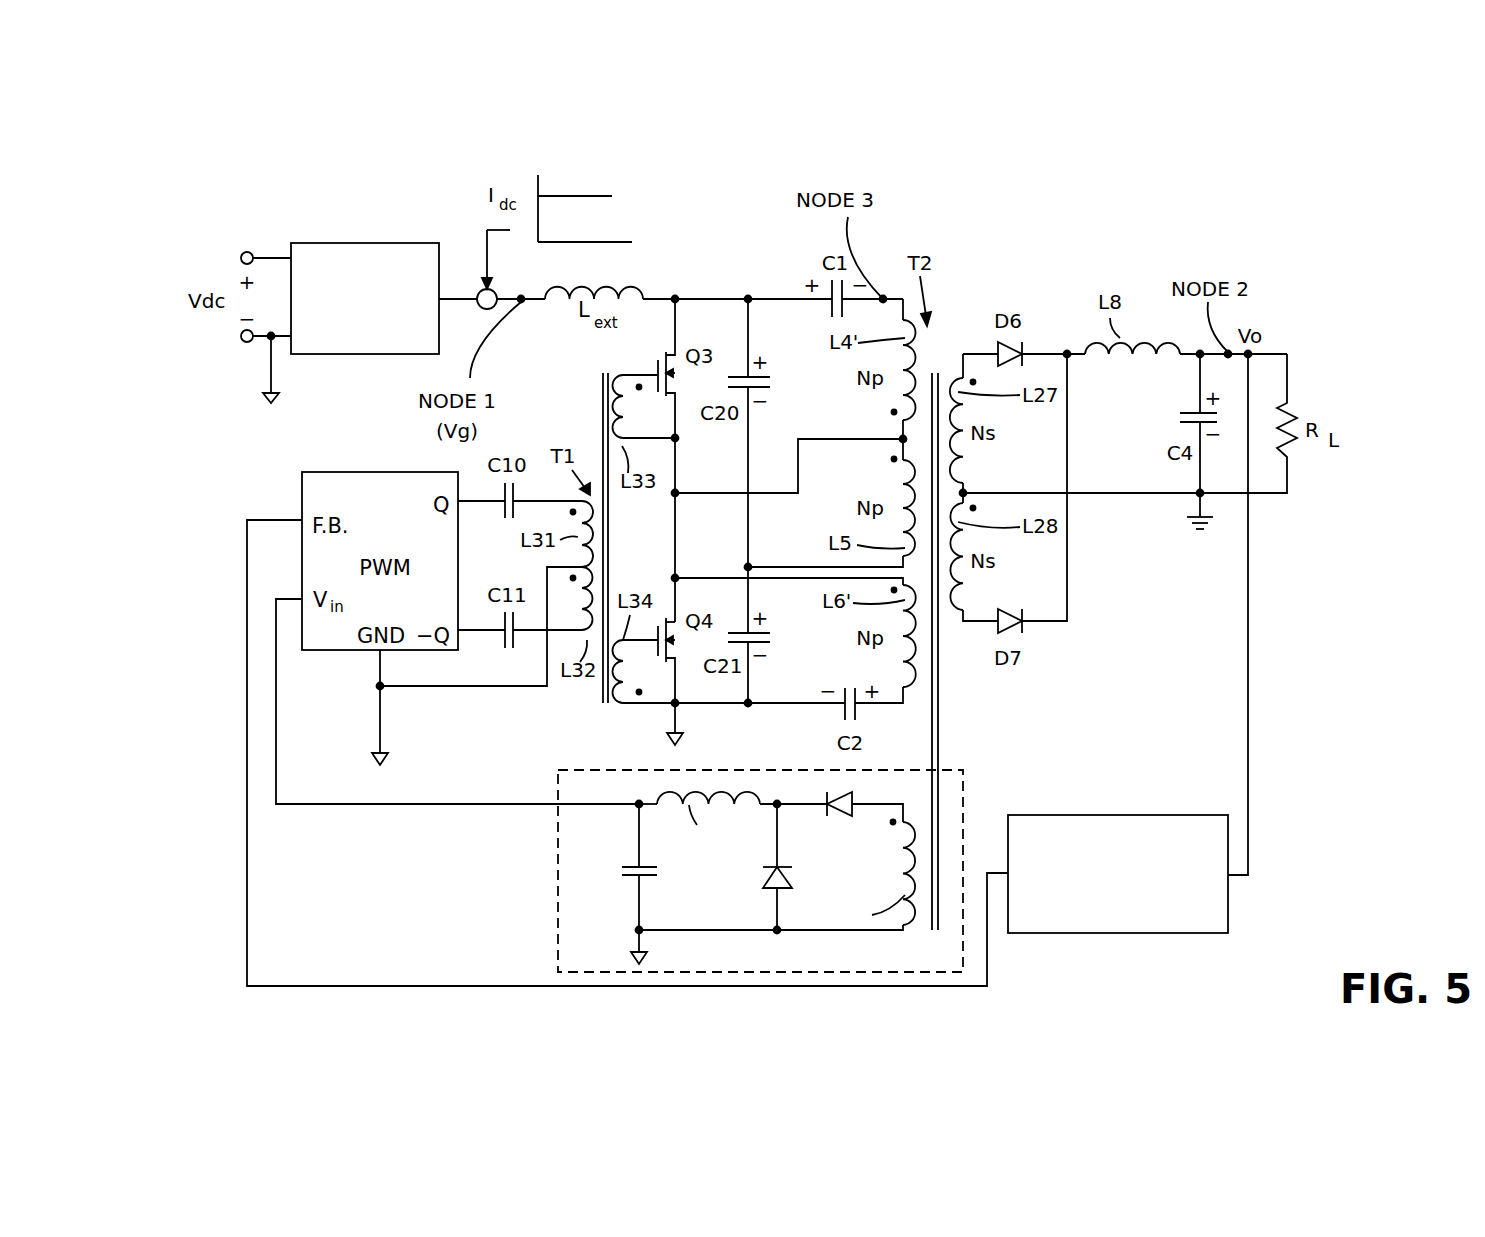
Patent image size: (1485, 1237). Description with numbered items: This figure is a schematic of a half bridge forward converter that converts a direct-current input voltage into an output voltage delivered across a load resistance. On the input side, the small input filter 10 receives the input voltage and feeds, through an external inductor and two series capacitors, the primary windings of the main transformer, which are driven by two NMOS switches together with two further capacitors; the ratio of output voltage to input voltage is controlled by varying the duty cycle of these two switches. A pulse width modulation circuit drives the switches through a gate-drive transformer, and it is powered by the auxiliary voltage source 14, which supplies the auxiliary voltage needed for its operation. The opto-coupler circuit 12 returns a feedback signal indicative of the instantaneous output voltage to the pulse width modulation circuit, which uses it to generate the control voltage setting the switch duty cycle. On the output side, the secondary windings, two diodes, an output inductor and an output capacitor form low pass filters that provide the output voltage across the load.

The input filter 10 is at (336, 243).
The opto-coupler circuit 12 is at (1123, 815).
The auxiliary voltage source 14 is at (558, 858).